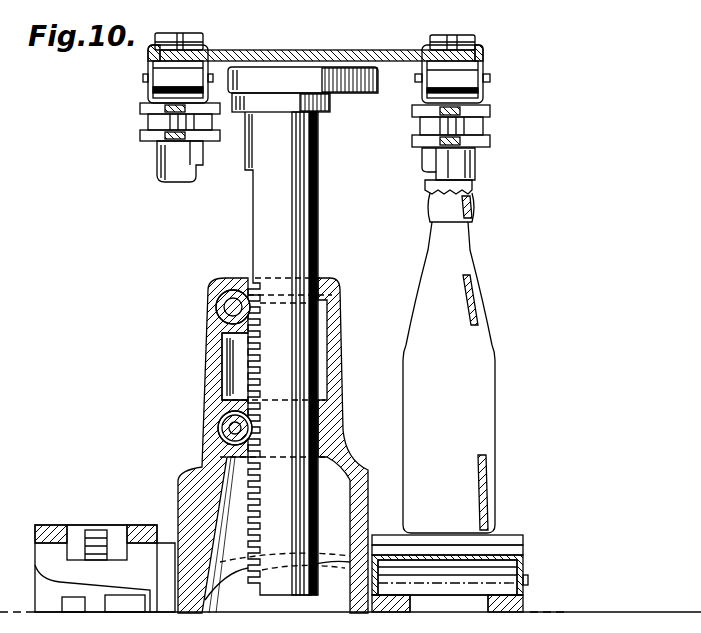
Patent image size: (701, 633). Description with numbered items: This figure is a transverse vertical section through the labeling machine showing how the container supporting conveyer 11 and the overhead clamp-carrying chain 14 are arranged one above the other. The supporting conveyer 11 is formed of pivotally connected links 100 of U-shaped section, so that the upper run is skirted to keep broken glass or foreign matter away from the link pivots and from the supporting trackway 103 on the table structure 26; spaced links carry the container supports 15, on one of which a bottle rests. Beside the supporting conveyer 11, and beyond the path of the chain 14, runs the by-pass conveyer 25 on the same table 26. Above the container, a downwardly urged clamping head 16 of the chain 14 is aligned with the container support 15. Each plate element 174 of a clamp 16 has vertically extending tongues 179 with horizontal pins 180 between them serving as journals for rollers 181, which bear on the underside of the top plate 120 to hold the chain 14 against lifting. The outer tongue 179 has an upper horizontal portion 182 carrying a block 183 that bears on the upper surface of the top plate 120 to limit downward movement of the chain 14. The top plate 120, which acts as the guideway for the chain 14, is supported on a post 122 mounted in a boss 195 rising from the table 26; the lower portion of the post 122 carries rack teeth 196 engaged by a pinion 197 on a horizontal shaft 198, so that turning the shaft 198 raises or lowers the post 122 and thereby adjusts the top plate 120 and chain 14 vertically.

The container supporting conveyer 11 is at (532, 554).
The clamp-carrying chain 14 is at (134, 130).
The container support 15 is at (509, 532).
The clamping head 16 is at (173, 167).
The by-pass conveyer 25 is at (98, 500).
The table structure 26 is at (192, 556).
The link 100 is at (525, 571).
The trackway 103 is at (521, 606).
The top plate 120 is at (233, 51).
The post 122 is at (258, 210).
The plate element 174 is at (491, 113).
The tongue 179 is at (484, 72).
The pin 180 is at (490, 84).
The roller 181 is at (166, 78).
The upper horizontal portion 182 is at (480, 44).
The block 183 is at (436, 35).
The boss 195 is at (215, 364).
The rack teeth 196 is at (248, 378).
The pinion 197 is at (221, 426).
The shaft 198 is at (228, 441).